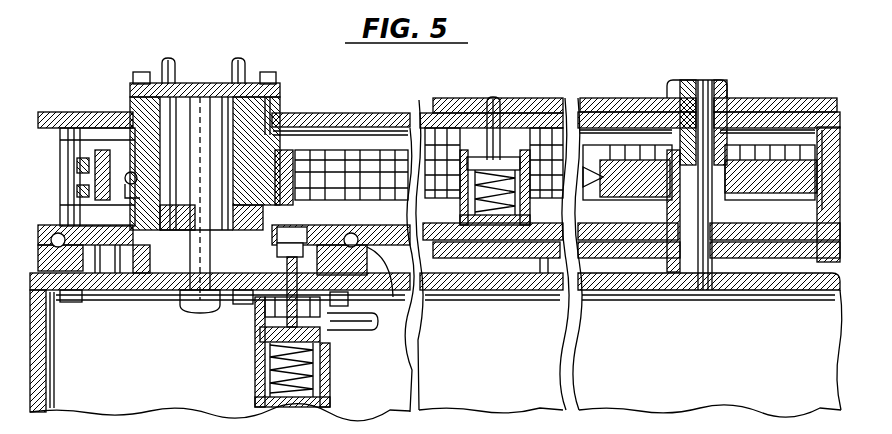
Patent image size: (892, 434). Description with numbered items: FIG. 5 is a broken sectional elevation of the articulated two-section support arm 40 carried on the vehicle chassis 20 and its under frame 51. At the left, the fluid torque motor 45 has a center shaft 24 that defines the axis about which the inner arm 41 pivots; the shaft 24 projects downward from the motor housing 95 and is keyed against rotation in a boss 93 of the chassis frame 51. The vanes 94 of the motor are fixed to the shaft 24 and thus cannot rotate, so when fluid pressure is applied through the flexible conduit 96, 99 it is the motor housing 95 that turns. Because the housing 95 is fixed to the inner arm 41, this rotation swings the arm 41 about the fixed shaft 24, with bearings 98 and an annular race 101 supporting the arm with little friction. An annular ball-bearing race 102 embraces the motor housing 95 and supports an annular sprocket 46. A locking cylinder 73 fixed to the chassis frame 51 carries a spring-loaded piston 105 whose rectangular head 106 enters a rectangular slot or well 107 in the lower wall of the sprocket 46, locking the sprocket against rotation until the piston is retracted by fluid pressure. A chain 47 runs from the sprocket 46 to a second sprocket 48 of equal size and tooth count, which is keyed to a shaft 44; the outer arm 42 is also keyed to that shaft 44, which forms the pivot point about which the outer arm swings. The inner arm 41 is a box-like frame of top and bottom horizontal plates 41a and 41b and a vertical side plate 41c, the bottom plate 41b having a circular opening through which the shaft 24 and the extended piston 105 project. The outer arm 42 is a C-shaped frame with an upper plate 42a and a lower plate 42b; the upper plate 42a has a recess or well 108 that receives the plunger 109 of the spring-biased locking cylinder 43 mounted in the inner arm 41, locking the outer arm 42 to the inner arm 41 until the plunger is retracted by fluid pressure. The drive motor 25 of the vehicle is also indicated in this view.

The vehicle chassis 20 is at (156, 380).
The center shaft 24 is at (195, 215).
The drive motor 25 is at (187, 110).
The bearing assembly 40 is at (413, 88).
The inner arm 41 is at (458, 237).
The top horizontal plate 41a is at (333, 118).
The bottom horizontal plate 41b is at (532, 227).
The vertical side plate 41c is at (78, 149).
The outer arm 42 is at (622, 89).
The upper plate 42a is at (523, 100).
The lower plate 42b is at (510, 250).
The spring-biased locking cylinder 43 is at (500, 233).
The shaft 44 is at (700, 80).
The fluid torque motor 45 is at (118, 99).
The annular sprocket 46 is at (95, 173).
The chain 47 is at (797, 195).
The second sprocket 48 is at (817, 140).
The under frame 51 is at (97, 293).
The locking cylinder 73 is at (257, 384).
The boss 93 is at (185, 228).
The vanes 94 is at (221, 100).
The motor housing 95 is at (283, 105).
The flexible conduit 96 is at (162, 62).
The bearings 98 is at (58, 233).
The flexible conduit 99 is at (246, 65).
The annular race 101 is at (385, 300).
The annular ball-bearing race 102 is at (135, 135).
The spring-loaded piston 105 is at (330, 335).
The rectangular head 106 is at (292, 258).
The rectangular slot or well 107 is at (280, 236).
The recess or well 108 is at (468, 98).
The plunger 109 is at (498, 97).